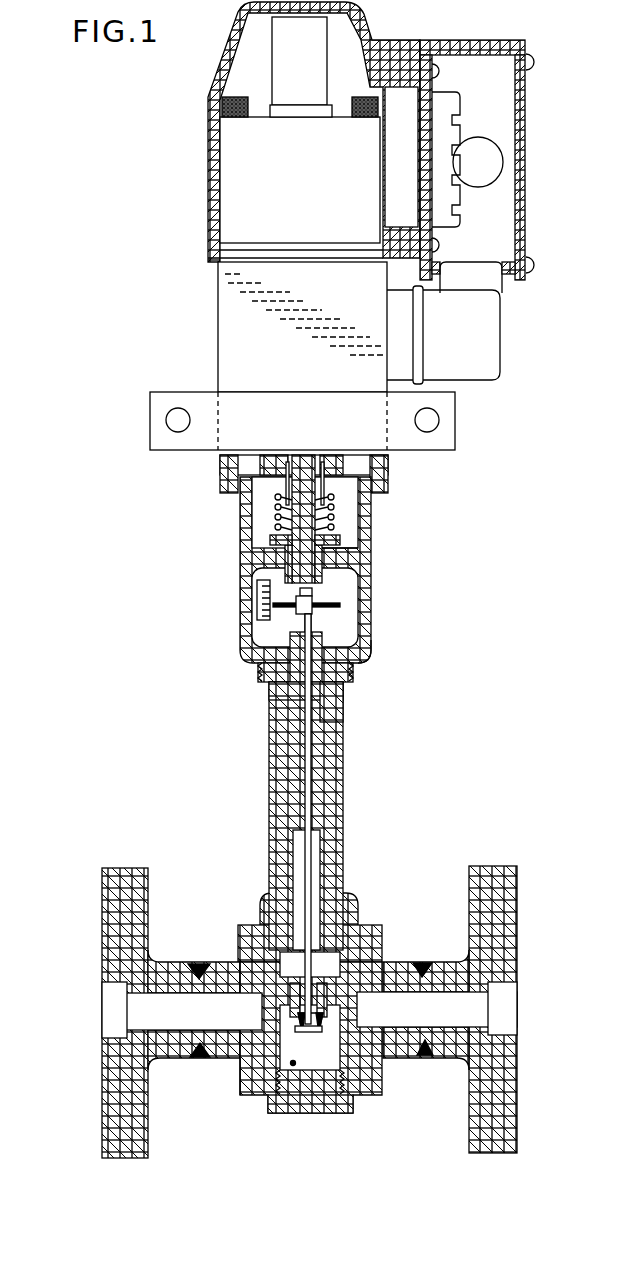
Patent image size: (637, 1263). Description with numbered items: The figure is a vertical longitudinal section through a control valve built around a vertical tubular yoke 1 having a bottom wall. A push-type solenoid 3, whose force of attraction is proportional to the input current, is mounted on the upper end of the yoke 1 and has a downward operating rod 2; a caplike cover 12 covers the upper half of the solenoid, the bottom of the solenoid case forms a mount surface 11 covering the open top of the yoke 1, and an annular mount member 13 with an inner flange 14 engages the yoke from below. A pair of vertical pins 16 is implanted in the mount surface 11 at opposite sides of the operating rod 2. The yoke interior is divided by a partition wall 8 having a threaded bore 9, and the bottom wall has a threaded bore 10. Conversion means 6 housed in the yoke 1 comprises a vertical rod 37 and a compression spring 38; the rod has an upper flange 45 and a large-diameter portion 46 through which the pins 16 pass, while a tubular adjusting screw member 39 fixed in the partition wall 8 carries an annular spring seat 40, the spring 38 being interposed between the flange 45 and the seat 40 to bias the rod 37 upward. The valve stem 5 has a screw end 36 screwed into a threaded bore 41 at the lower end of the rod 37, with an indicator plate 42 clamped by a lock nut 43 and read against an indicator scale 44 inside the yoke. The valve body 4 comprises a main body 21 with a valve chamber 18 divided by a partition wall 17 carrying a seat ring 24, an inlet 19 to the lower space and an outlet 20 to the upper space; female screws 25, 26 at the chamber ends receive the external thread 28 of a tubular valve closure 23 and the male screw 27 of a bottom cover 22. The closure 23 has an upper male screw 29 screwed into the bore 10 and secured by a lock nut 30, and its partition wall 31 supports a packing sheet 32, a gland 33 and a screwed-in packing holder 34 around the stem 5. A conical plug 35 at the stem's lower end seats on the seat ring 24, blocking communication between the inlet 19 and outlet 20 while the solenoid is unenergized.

The yoke 1 is at (240, 557).
The operating rod 2 is at (305, 458).
The solenoid 3 is at (230, 322).
The valve body 4 is at (110, 862).
The valve stem 5 is at (305, 766).
The conversion means 6 is at (262, 512).
The partition wall 8 is at (340, 560).
The threaded bore 9 is at (328, 578).
The threaded bore 10 is at (360, 656).
The mount surface 11 is at (252, 500).
The cover 12 is at (222, 70).
The mount member 13 is at (389, 462).
The inner flange 14 is at (375, 493).
The vertical pins 16 is at (285, 457).
The partition wall 17 is at (290, 993).
The valve chamber 18 is at (282, 1096).
The inlet 19 is at (105, 995).
The outlet 20 is at (510, 985).
The main body 21 is at (248, 1068).
The bottom cover 22 is at (276, 1106).
The valve closure 23 is at (278, 841).
The seat ring 24 is at (330, 1022).
The female screw 25 is at (268, 903).
The female screw 26 is at (346, 1100).
The male screw 27 is at (355, 1093).
The external thread 28 is at (343, 940).
The male screw 29 is at (348, 678).
The lock nut 30 is at (262, 672).
The partition wall 31 is at (297, 797).
The packing sheet 32 is at (343, 712).
The gland 33 is at (323, 696).
The packing holder 34 is at (293, 685).
The conical plug 35 is at (293, 1066).
The screw end 36 is at (314, 600).
The vertical rod 37 is at (312, 583).
The compression spring 38 is at (270, 522).
The adjusting screw member 39 is at (287, 578).
The spring seat 40 is at (338, 542).
The threaded bore 41 is at (262, 600).
The indicator plate 42 is at (316, 607).
The lock nut 43 is at (296, 607).
The indicator scale 44 is at (262, 612).
The flange 45 is at (325, 505).
The large-diameter portion 46 is at (334, 525).